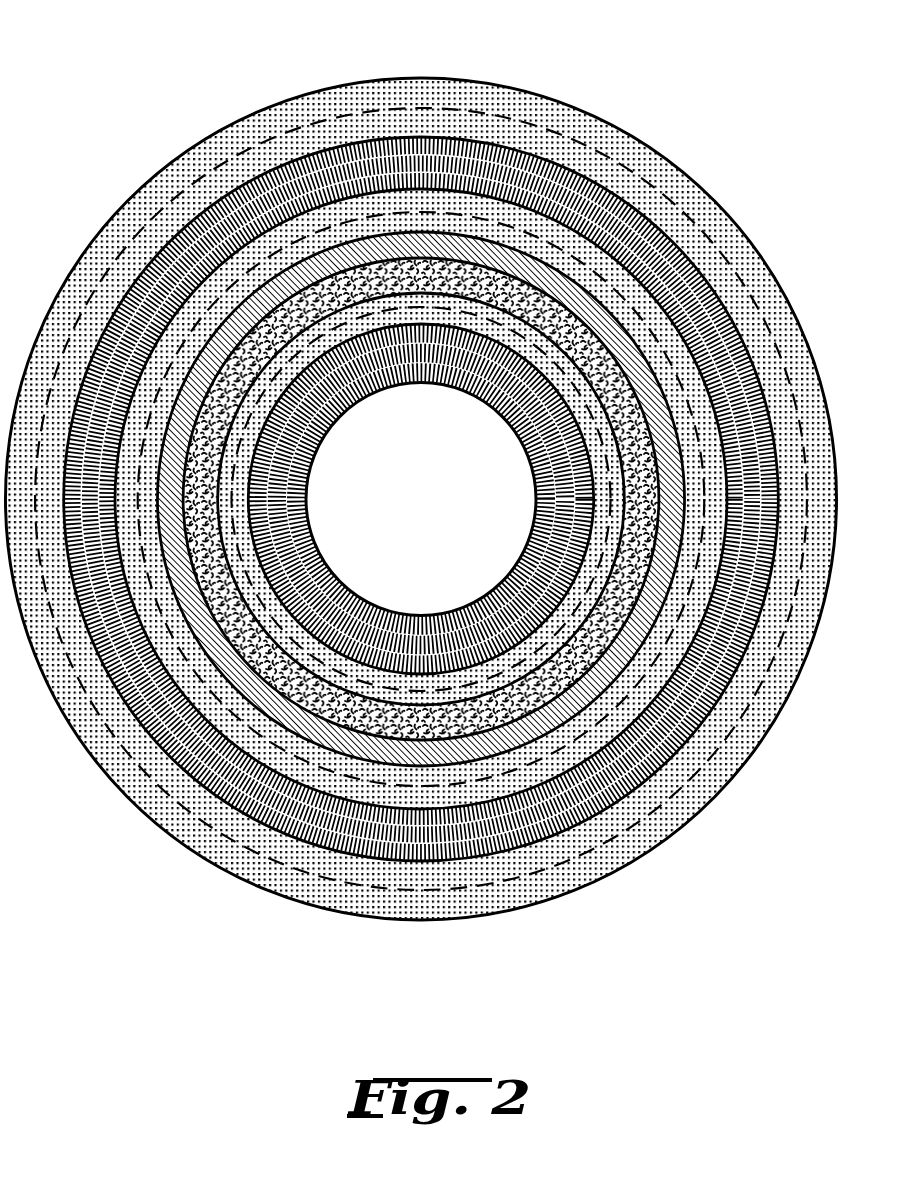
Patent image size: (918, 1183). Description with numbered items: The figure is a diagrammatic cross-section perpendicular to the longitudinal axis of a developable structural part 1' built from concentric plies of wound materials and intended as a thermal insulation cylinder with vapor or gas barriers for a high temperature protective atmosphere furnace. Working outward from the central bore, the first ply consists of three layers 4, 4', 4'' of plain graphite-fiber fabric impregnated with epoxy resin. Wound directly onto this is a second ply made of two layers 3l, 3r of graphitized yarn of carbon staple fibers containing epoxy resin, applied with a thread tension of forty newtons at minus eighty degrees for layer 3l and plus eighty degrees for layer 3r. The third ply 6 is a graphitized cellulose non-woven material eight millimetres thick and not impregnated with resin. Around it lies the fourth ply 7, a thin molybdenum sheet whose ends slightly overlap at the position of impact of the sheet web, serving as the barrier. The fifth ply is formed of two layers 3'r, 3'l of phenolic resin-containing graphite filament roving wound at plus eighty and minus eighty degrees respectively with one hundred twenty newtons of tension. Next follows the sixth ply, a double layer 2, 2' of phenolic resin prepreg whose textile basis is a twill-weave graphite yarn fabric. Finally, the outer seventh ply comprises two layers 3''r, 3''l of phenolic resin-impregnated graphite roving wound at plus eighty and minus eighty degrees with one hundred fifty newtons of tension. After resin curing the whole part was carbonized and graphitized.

The developable structural part 1' is at (420, 462).
The prepreg layer of sixth ply 2 is at (421, 523).
The prepreg layer of sixth ply 2' is at (421, 521).
The graphitized yarn layer 3l is at (535, 445).
The graphitized yarn layer 3r is at (610, 502).
The graphite filament roving layer 3'l is at (423, 536).
The graphite filament roving layer 3'r is at (458, 518).
The outer roving layer 3''l is at (421, 553).
The outer roving layer 3''r is at (421, 532).
The plain fabric layer 4 is at (421, 499).
The plain fabric layer 4' is at (421, 494).
The plain fabric layer 4'' is at (421, 499).
The graphitized cellulose non-woven ply 6 is at (633, 553).
The molybdenum sheet ply 7 is at (612, 647).